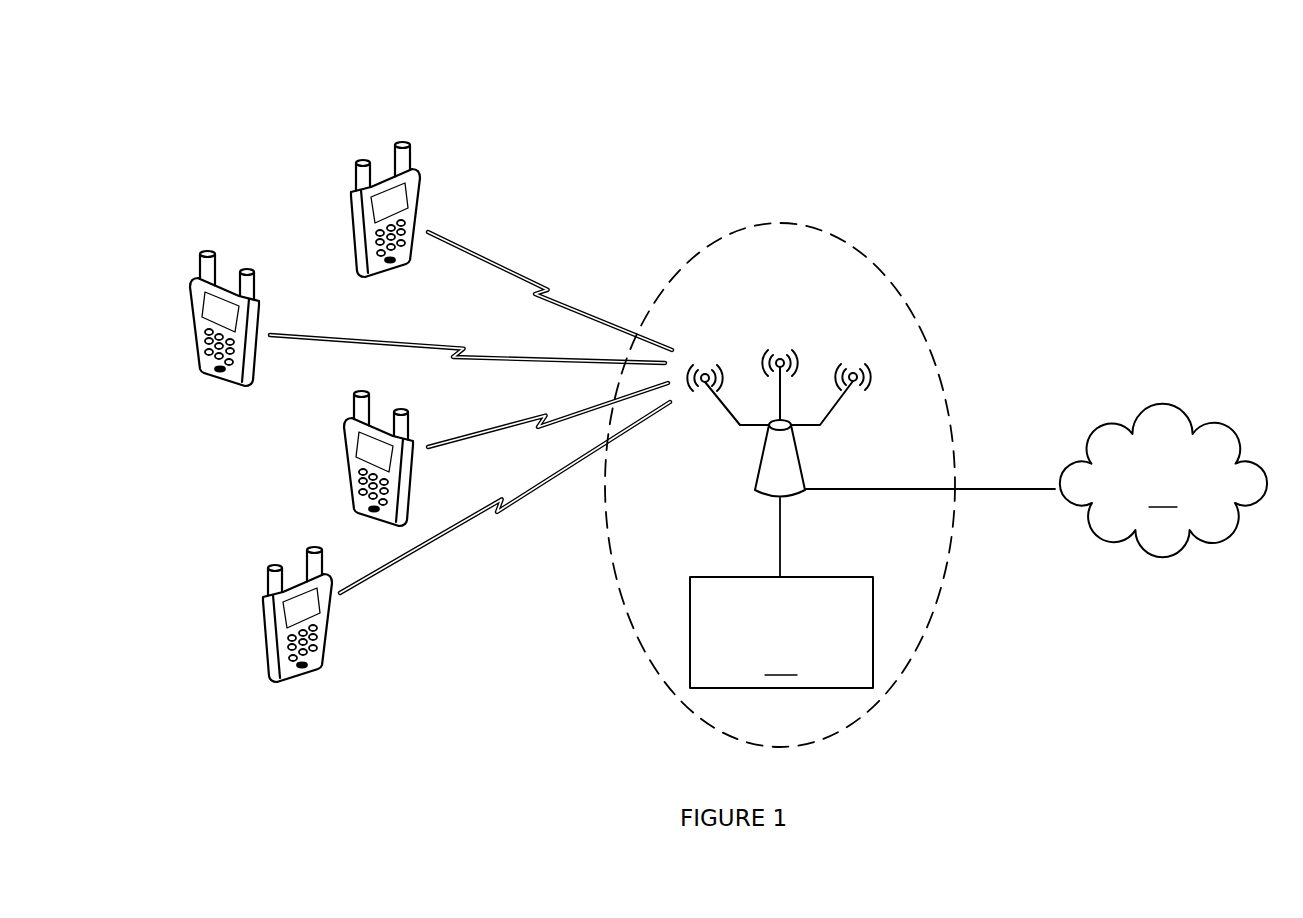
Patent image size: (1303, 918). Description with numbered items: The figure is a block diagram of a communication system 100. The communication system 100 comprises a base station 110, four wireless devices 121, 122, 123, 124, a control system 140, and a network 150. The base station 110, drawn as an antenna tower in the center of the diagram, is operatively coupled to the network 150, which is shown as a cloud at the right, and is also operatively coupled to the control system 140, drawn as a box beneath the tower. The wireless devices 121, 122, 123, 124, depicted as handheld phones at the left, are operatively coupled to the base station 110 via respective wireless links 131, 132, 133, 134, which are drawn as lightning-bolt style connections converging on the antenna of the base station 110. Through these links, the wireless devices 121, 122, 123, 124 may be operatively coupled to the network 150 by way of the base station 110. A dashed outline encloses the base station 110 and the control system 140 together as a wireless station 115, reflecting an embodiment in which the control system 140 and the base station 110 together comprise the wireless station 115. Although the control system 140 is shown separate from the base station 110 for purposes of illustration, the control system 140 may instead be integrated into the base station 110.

The communication system 100 is at (1185, 90).
The base station 110 is at (773, 502).
The wireless station 115 is at (888, 272).
The wireless device 121 is at (365, 277).
The wireless device 122 is at (388, 520).
The wireless device 123 is at (243, 383).
The wireless device 124 is at (313, 665).
The wireless link 131 is at (536, 273).
The wireless link 132 is at (593, 402).
The wireless link 133 is at (583, 360).
The wireless link 134 is at (567, 462).
The control system 140 is at (781, 632).
The network 150 is at (1163, 480).